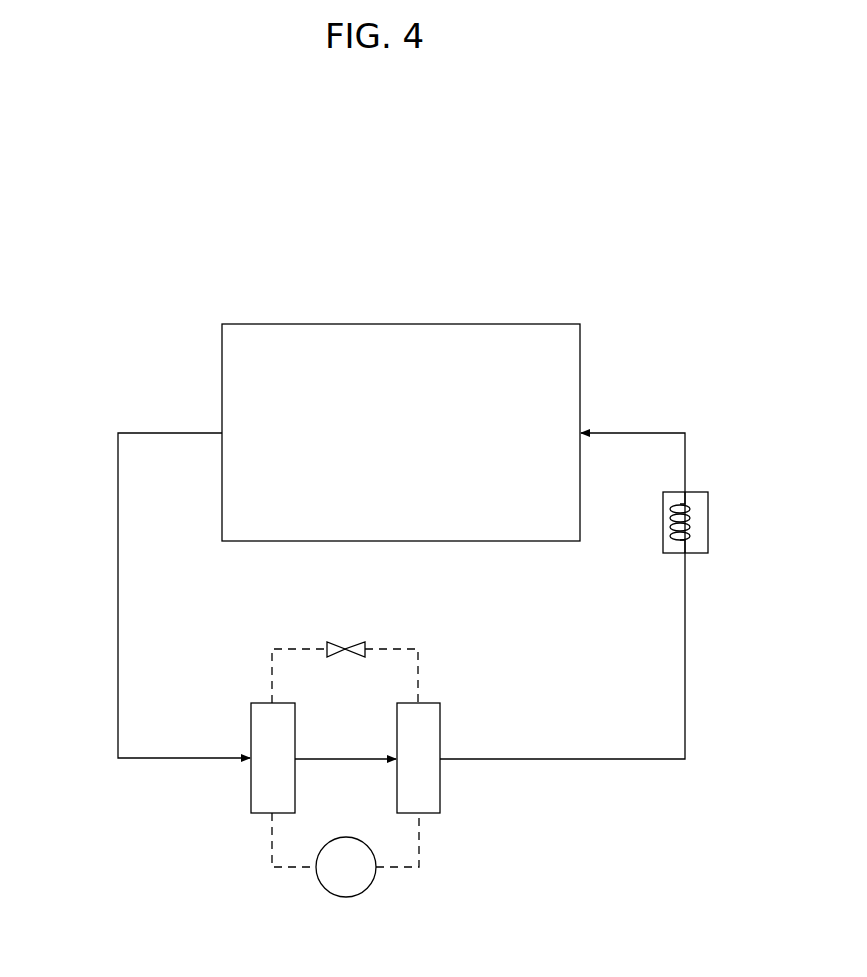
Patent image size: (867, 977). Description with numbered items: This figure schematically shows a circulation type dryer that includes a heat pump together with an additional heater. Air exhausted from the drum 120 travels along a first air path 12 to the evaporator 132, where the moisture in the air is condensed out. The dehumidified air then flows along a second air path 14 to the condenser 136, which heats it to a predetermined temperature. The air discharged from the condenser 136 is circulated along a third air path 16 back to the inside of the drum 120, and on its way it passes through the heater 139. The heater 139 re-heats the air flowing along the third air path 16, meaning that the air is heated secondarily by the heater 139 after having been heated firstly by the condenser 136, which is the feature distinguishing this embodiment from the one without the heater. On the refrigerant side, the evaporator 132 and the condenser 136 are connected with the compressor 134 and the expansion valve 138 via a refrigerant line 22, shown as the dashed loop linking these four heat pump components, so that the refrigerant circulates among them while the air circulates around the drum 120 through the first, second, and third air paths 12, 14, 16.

The drum 120 is at (400, 324).
The first air path 12 is at (118, 661).
The second air path 14 is at (346, 761).
The third air path 16 is at (603, 762).
The refrigerant line 22 is at (272, 677).
The evaporator 132 is at (251, 798).
The compressor 134 is at (346, 898).
The condenser 136 is at (440, 798).
The expansion valve 138 is at (345, 645).
The heater 139 is at (708, 537).